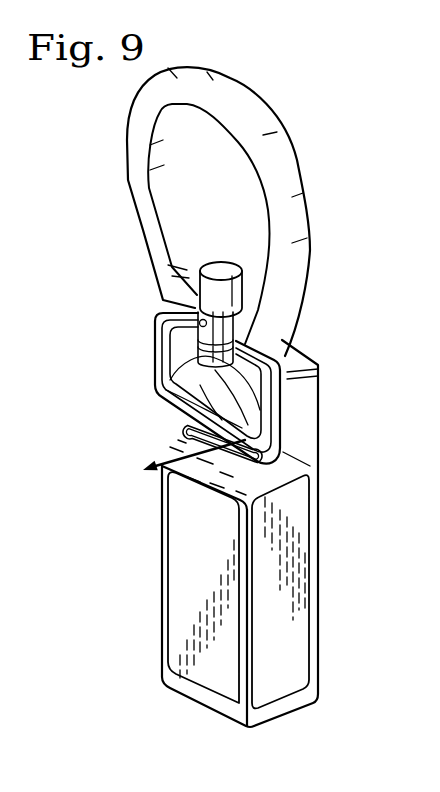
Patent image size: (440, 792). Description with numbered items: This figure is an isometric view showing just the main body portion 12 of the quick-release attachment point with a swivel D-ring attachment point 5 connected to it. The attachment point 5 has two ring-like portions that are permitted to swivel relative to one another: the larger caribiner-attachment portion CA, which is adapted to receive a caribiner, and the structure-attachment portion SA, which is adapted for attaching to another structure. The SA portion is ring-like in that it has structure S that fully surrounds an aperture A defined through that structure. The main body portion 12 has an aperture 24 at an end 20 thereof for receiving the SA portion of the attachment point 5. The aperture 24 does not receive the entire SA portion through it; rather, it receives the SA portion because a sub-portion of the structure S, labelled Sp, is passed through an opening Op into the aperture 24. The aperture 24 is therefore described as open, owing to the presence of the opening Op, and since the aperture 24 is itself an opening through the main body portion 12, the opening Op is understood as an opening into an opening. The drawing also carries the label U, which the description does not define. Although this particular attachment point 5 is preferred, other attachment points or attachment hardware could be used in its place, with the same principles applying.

The attachment point 5 is at (322, 140).
The caribiner-attachment portion CA is at (298, 223).
The structure-attachment portion SA is at (287, 410).
The aperture 24 is at (295, 448).
The main body portion 12 is at (333, 595).
The aperture A is at (178, 346).
The structure S is at (157, 357).
The opening Op is at (189, 428).
The direction of use U is at (170, 461).
The sub-portion of the structure Sp is at (220, 437).
The end 20 is at (128, 553).